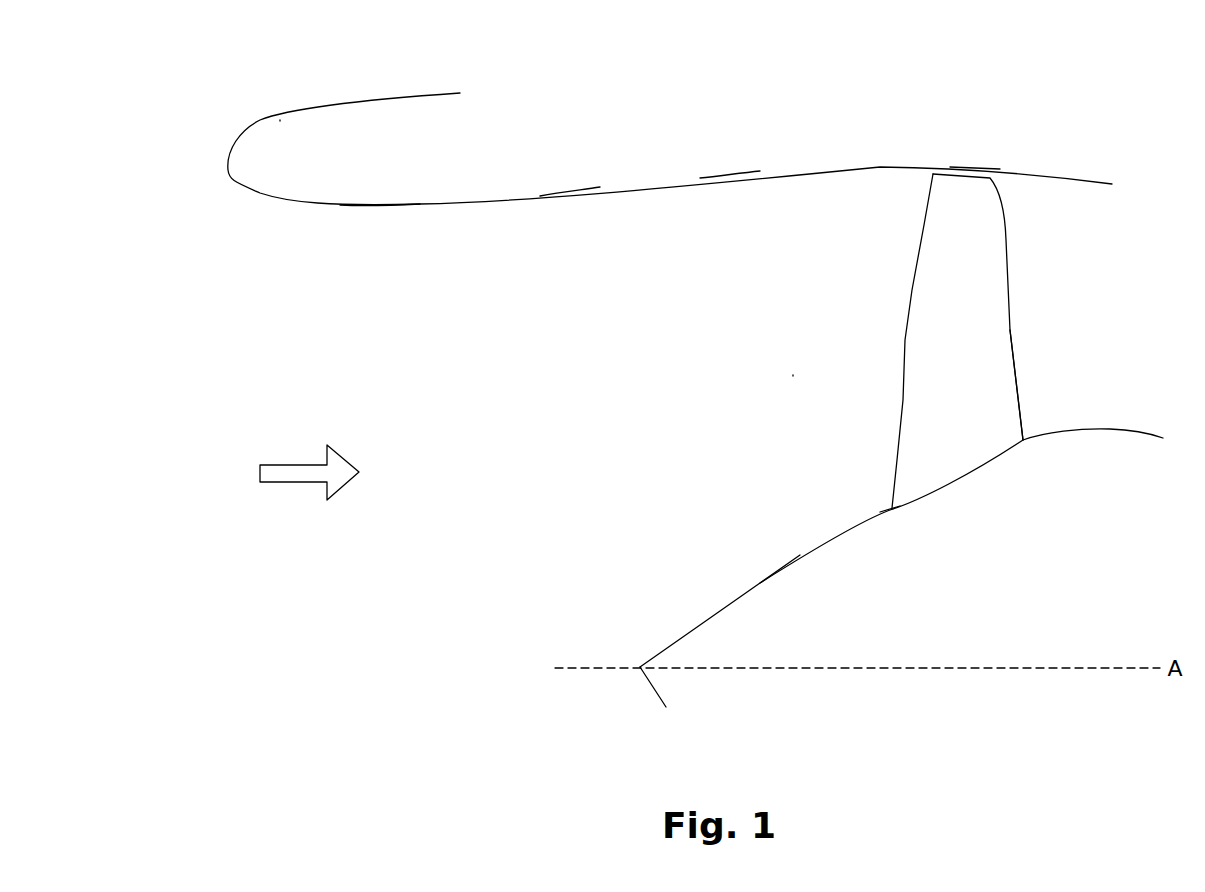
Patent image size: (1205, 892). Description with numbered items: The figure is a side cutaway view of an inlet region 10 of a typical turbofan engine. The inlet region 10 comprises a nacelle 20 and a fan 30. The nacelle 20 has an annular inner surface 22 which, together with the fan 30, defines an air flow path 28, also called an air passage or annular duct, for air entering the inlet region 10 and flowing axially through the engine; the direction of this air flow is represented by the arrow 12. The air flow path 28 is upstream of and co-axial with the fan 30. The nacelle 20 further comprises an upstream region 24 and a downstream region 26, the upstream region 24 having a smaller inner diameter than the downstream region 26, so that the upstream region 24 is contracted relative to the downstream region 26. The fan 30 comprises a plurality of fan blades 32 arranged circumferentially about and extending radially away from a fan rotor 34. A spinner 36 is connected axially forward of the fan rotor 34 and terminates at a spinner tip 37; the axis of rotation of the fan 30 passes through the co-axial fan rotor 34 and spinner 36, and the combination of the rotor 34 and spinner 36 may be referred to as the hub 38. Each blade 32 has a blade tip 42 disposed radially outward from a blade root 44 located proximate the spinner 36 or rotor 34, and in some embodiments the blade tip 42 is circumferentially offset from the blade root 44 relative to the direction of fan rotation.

The inlet region 10 is at (252, 76).
The arrow 12 is at (219, 485).
The nacelle 20 is at (347, 164).
The annular inner surface 22 is at (572, 195).
The upstream region 24 is at (386, 214).
The downstream region 26 is at (731, 200).
The air flow path 28 is at (780, 400).
The fan 30 is at (1121, 335).
The fan blade 32 is at (942, 355).
The fan rotor 34 is at (1040, 490).
The spinner 36 is at (714, 645).
The spinner tip 37 is at (640, 666).
The hub 38 is at (772, 524).
The blade tip 42 is at (978, 167).
The blade root 44 is at (888, 505).